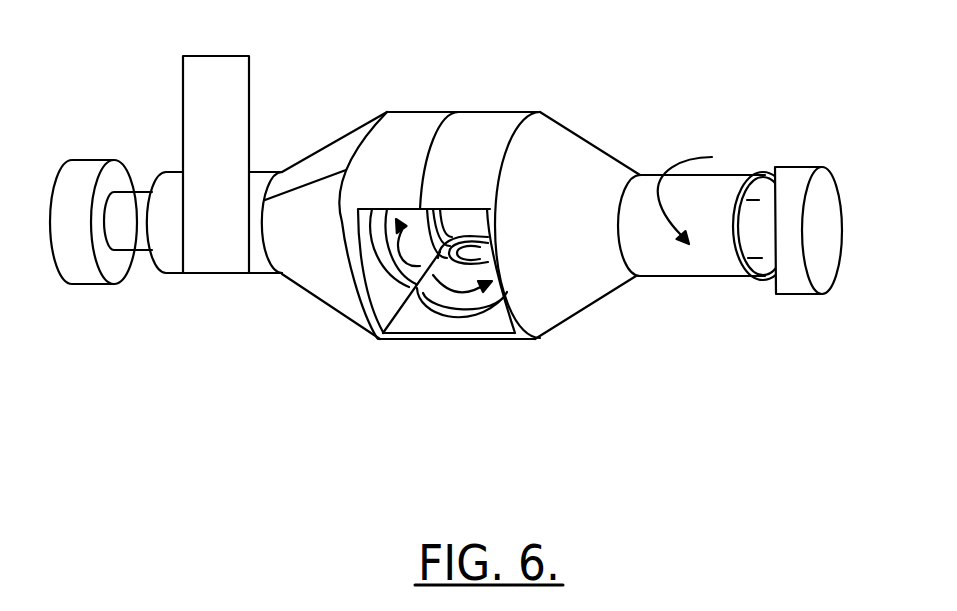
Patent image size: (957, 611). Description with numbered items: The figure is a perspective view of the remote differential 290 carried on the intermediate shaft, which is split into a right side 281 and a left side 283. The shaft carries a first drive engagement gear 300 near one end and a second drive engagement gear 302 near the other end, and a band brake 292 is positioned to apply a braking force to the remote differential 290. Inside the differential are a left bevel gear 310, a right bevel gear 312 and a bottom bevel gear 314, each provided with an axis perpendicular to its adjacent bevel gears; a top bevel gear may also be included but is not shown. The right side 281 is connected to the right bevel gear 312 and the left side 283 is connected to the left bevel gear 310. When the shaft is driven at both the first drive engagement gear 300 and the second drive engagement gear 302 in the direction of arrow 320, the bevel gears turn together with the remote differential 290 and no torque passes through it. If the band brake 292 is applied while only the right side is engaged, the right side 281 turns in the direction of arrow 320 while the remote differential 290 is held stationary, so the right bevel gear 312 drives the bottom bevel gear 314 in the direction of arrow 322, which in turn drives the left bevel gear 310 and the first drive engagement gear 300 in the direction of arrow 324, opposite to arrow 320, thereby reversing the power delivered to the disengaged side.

The right side 281 is at (750, 243).
The left side 283 is at (133, 230).
The remote differential 290 is at (573, 288).
The band brake 292 is at (217, 77).
The first drive engagement gear 300 is at (75, 262).
The second drive engagement gear 302 is at (793, 280).
The left bevel gear 310 is at (386, 270).
The right bevel gear 312 is at (487, 218).
The bottom bevel gear 314 is at (473, 318).
The arrow 320 is at (687, 157).
The arrow 322 is at (456, 293).
The arrow 324 is at (404, 214).